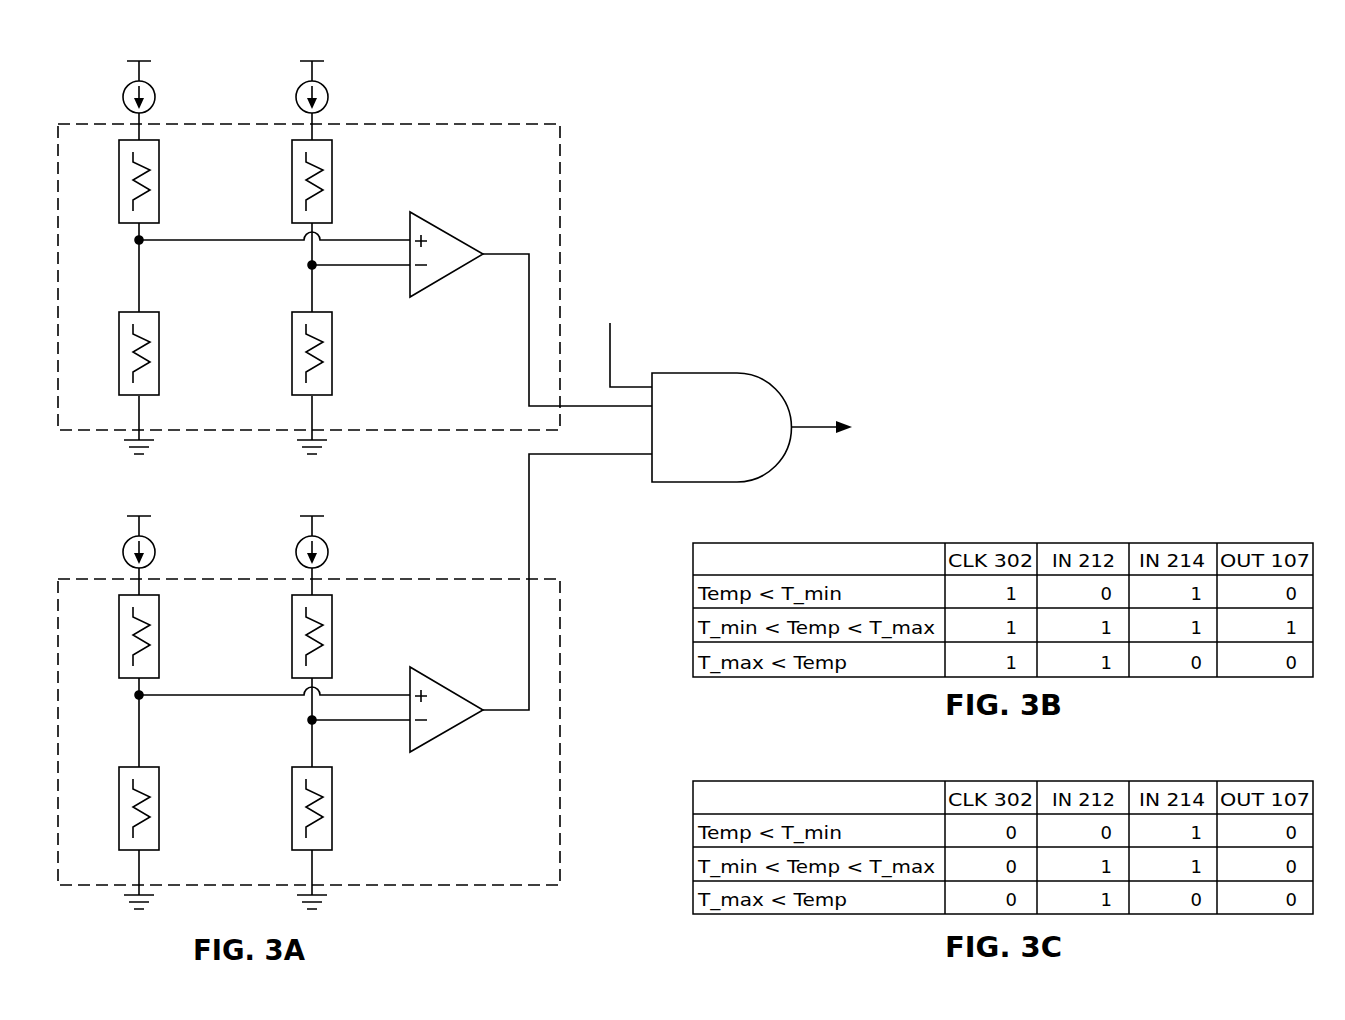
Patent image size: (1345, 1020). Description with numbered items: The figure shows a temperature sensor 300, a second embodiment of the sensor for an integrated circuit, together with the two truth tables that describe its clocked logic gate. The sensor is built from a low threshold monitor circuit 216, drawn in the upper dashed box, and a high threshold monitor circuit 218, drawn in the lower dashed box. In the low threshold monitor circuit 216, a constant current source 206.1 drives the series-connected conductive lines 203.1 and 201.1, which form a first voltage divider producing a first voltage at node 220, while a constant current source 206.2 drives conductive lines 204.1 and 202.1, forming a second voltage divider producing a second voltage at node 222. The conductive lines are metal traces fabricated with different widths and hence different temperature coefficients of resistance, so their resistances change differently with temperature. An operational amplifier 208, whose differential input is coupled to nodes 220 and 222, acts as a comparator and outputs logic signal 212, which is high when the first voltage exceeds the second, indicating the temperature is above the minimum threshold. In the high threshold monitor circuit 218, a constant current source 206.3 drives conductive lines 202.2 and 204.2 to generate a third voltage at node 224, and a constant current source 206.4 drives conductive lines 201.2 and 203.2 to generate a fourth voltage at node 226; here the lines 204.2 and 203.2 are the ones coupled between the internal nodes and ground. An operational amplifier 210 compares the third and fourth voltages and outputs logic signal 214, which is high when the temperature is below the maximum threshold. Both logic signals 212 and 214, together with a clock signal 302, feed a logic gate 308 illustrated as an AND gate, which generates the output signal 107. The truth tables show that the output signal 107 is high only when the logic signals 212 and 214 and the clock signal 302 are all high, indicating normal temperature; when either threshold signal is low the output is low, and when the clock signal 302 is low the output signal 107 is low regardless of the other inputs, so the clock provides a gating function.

The temperature sensor 300 is at (551, 81).
The low threshold monitor circuit 216 is at (560, 140).
The high threshold monitor circuit 218 is at (560, 595).
The constant current source 206.1 is at (153, 86).
The constant current source 206.2 is at (326, 86).
The constant current source 206.3 is at (153, 541).
The constant current source 206.4 is at (326, 541).
The conductive line 201.1 is at (159, 348).
The conductive line 201.2 is at (332, 633).
The conductive line 202.1 is at (332, 348).
The conductive line 202.2 is at (159, 633).
The conductive line 203.1 is at (159, 178).
The conductive line 203.2 is at (332, 803).
The conductive line 204.1 is at (332, 178).
The conductive line 204.2 is at (159, 803).
The operational amplifier 208 is at (446, 228).
The operational amplifier 210 is at (446, 684).
The logic signal 212 is at (529, 305).
The logic signal 214 is at (529, 586).
The node 220 is at (136, 241).
The node 222 is at (309, 266).
The node 224 is at (136, 696).
The node 226 is at (309, 721).
The clock signal 302 is at (610, 354).
The logic gate 308 is at (718, 373).
The output signal 107 is at (812, 428).